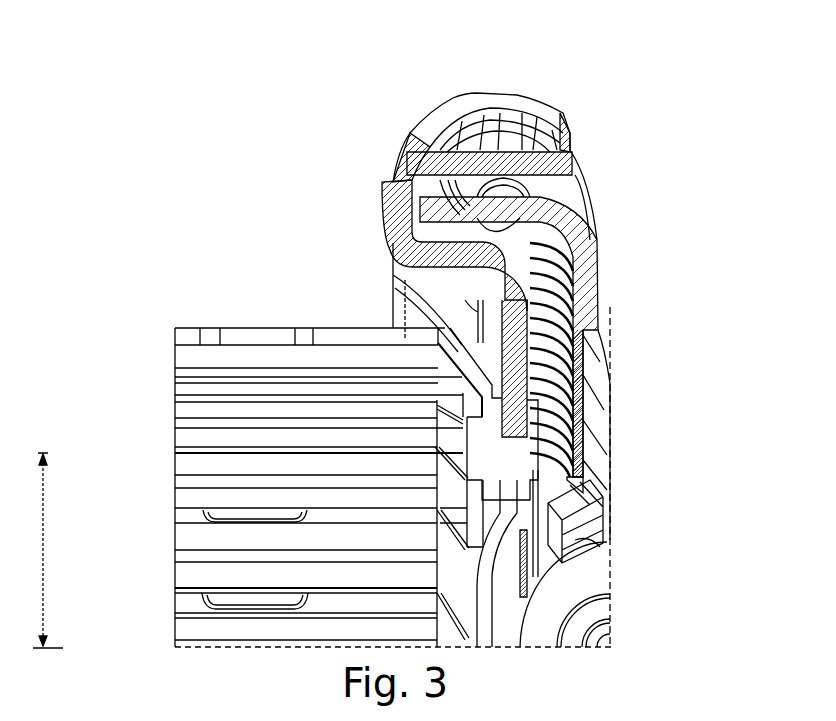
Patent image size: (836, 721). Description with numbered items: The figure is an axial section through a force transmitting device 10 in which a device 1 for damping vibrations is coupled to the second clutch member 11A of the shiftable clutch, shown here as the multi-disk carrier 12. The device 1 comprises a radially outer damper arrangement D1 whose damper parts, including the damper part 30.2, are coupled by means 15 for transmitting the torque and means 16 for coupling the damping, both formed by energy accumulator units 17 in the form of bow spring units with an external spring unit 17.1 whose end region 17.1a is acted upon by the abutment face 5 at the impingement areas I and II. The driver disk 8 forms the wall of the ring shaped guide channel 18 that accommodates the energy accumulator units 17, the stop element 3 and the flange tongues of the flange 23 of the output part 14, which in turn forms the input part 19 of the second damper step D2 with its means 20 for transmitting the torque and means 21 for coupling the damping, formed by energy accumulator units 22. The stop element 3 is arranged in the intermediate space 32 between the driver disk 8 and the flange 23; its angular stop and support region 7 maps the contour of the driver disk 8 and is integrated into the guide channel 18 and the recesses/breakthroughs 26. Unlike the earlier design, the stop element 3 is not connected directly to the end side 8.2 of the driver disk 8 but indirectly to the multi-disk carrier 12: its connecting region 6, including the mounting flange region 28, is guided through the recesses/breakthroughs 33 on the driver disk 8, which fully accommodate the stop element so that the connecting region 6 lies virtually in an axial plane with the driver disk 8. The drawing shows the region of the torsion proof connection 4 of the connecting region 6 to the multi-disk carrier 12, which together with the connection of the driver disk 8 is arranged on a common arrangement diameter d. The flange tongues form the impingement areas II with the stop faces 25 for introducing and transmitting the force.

The device for damping vibrations 1 is at (483, 85).
The stop element 3 is at (612, 383).
The torsion proof connection 4 is at (615, 510).
The abutment face 5 is at (477, 147).
The connecting region 6 is at (610, 428).
The stop and support region 7 is at (393, 203).
The driver disk 8 is at (437, 143).
The end side of the driver disk 8.2 is at (498, 630).
The force transmitting device 10 is at (233, 167).
The second clutch member 11A is at (393, 458).
The multi-disk carrier 12 is at (335, 328).
The output part of the first damper arrangement 14 is at (678, 209).
The means for transmitting the torque 15 is at (642, 360).
The means for coupling the damping 16 is at (603, 300).
The energy accumulator units 17 is at (500, 137).
The external spring unit 17.1 is at (573, 152).
The end region of the external spring unit 17.1a is at (532, 190).
The guide channel 18 is at (572, 122).
The input part 19 is at (607, 547).
The means for transmitting the torque 20 is at (652, 594).
The means for coupling the damping 21 is at (652, 594).
The energy accumulator units 22 is at (620, 589).
The flange 23 is at (572, 222).
The stop faces 25 is at (397, 240).
The recesses/breakthroughs 26 is at (440, 147).
The mounting flange region 28 is at (633, 412).
The damper part 30.2 is at (678, 209).
The intermediate space 32 is at (598, 272).
The recesses/breakthroughs 33 is at (492, 362).
The impingement area I is at (433, 127).
The impingement area II is at (440, 208).
The radially outer damper arrangement D1 is at (530, 127).
The second damper step D2 is at (620, 623).
The common arrangement diameter d is at (41, 550).